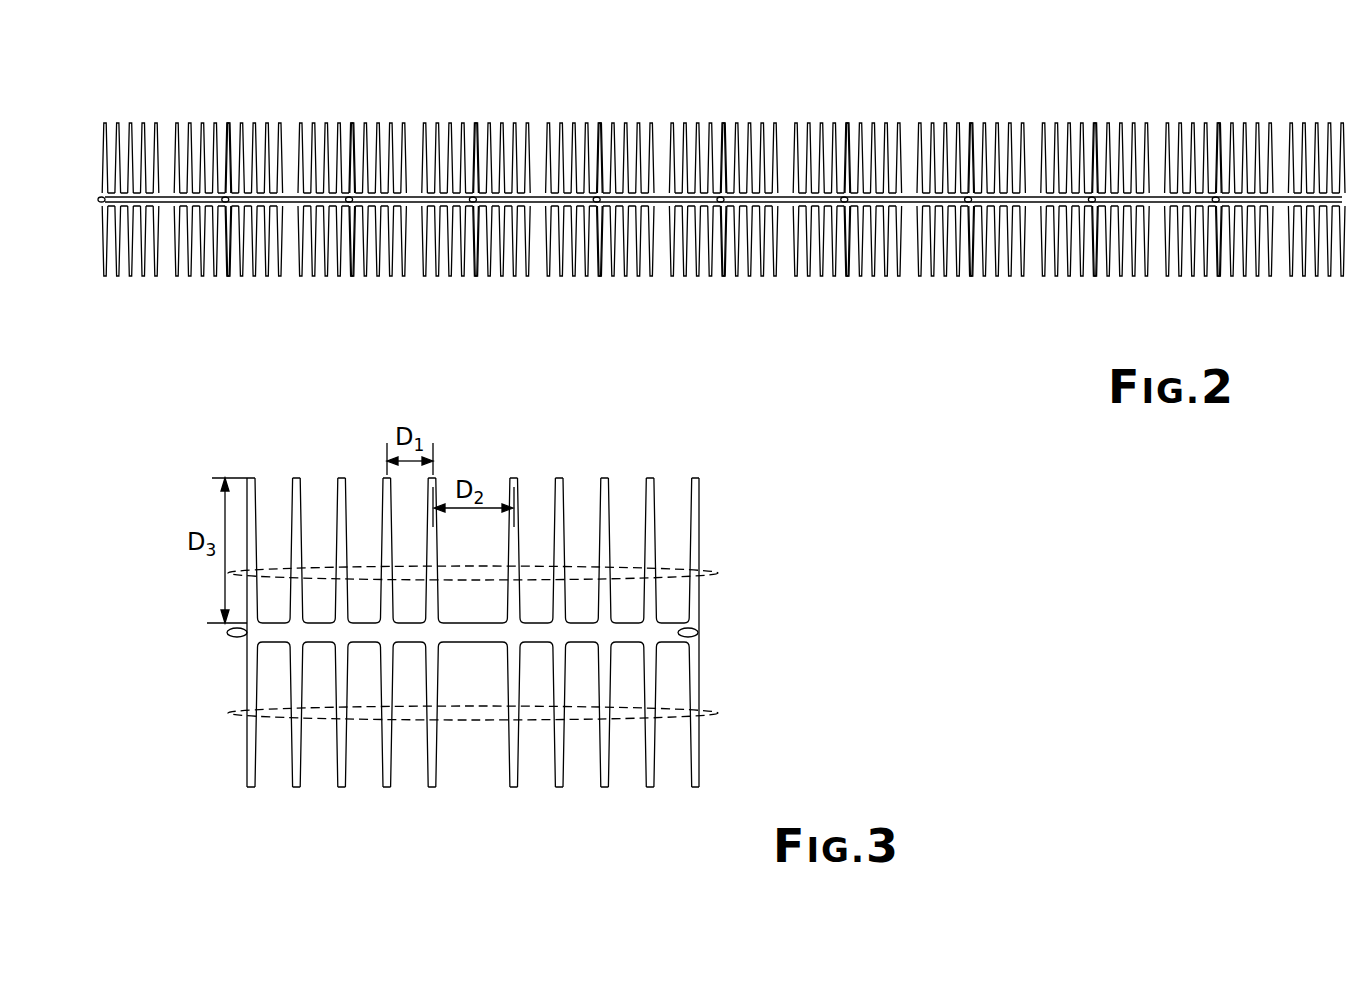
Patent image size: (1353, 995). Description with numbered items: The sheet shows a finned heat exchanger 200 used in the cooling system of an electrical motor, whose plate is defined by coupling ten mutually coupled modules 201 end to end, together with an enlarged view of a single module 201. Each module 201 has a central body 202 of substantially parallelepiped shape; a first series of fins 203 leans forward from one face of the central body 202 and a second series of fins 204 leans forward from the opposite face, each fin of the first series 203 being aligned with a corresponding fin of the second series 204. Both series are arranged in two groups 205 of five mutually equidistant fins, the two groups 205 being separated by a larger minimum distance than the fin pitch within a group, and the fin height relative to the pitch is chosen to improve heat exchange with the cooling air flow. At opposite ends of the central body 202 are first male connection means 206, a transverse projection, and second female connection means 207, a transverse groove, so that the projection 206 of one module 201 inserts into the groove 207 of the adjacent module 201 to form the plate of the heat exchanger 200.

In FIG. 2, the finned heat exchanger 200 is at (708, 141).
In FIG. 2, the module 201 is at (476, 118).
In FIG. 3, the central body 202 is at (477, 626).
In FIG. 3, the first series of fins 203 is at (705, 572).
In FIG. 3, the second series of fins 204 is at (230, 713).
In FIG. 3, the group of fins 205 is at (247, 472).
In FIG. 3, the first male connection means 206 is at (236, 637).
In FIG. 3, the second female connection means 207 is at (692, 638).